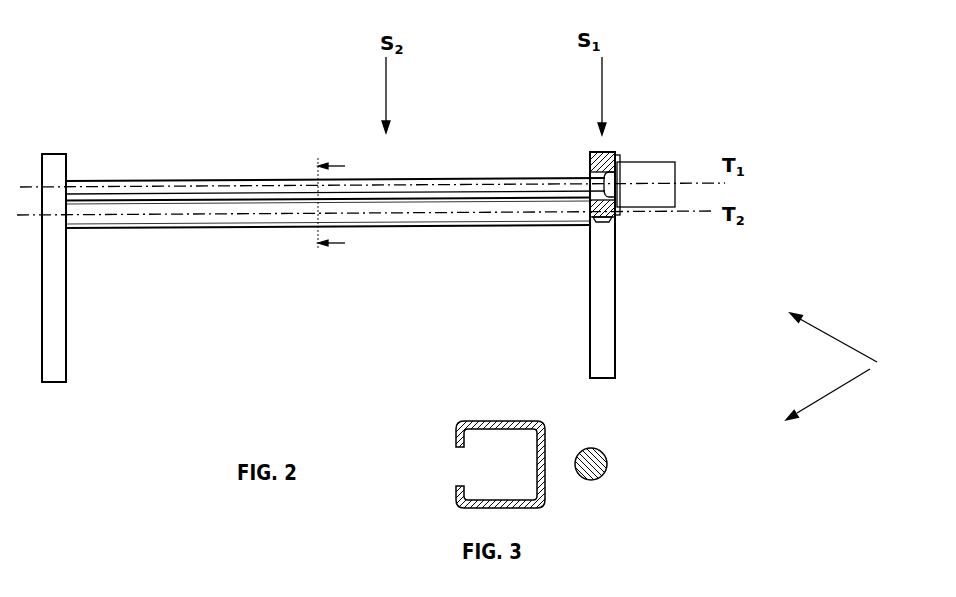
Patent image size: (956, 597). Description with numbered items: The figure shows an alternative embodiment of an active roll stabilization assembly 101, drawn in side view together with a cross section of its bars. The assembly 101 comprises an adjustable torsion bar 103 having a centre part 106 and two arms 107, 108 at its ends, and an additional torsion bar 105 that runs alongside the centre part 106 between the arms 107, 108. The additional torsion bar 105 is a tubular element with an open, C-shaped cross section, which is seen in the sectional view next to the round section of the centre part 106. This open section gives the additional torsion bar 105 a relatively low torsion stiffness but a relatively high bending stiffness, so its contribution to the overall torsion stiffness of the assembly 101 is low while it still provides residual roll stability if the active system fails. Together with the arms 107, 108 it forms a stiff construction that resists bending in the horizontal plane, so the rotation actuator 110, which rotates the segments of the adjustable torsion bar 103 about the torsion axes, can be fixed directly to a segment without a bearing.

In FIG. 2, the ARS assembly 101 is at (839, 366).
In FIG. 2, the adjustable torsion bar 103 is at (112, 137).
In FIG. 2, the additional torsion bar 105 is at (189, 219).
In FIG. 3, the additional torsion bar 105 is at (485, 421).
In FIG. 2, the centre part 106 is at (188, 187).
In FIG. 3, the centre part 106 is at (607, 464).
In FIG. 2, the arm 107 is at (55, 351).
In FIG. 2, the arm 108 is at (603, 347).
In FIG. 2, the rotation actuator 110 is at (647, 162).